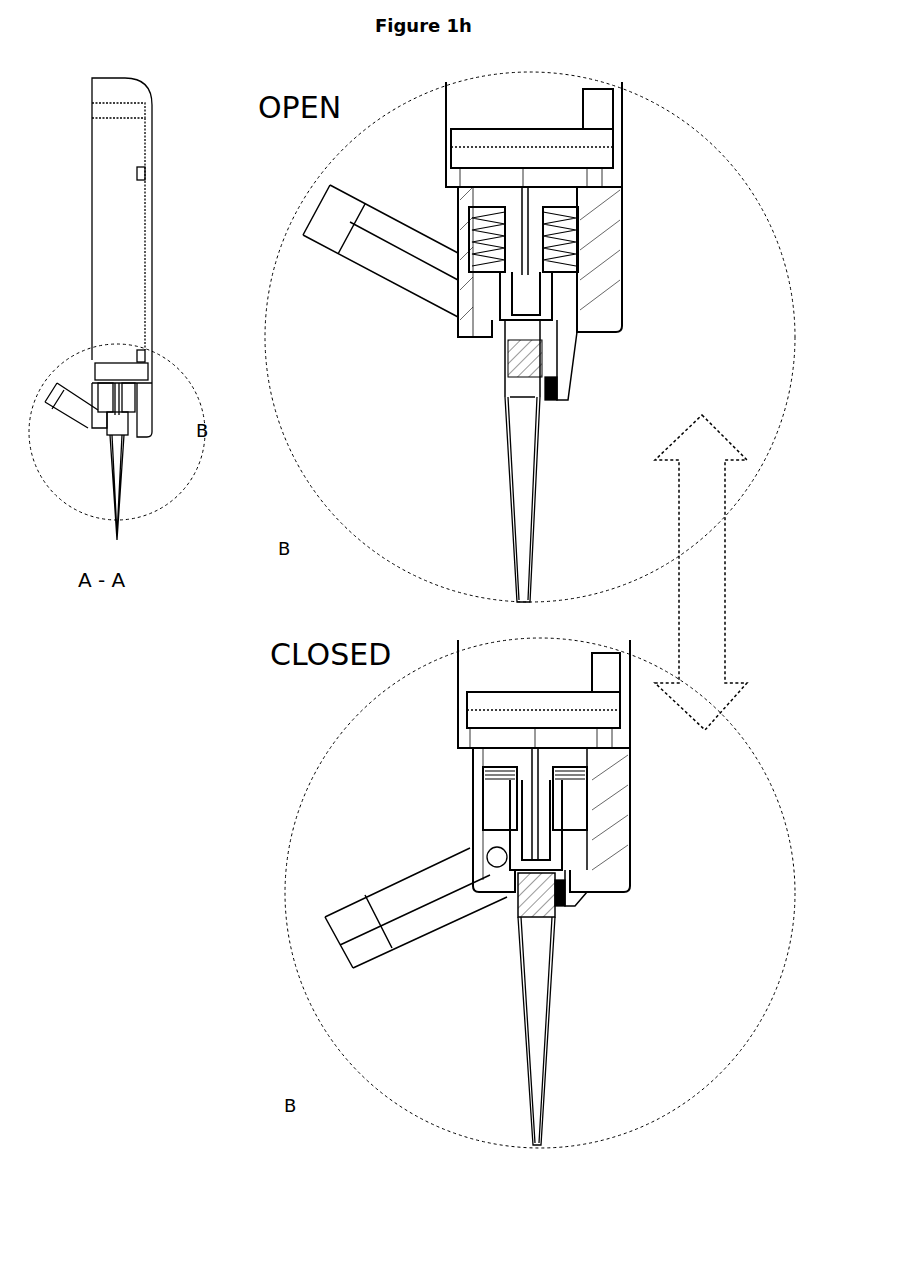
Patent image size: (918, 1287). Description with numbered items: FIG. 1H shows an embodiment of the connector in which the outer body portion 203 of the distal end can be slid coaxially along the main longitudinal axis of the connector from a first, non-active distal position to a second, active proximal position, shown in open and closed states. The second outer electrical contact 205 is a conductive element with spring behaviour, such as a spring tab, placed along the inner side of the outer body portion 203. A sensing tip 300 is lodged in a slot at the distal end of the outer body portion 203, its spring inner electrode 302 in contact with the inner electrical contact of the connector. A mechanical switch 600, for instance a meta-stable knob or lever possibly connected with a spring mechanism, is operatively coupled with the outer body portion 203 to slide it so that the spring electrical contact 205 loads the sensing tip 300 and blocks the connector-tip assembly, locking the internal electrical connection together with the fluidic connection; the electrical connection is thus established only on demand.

The mechanical switch 600 is at (492, 233).
The spring inner electrode 302 is at (510, 360).
The outer body portion 203 is at (567, 360).
The second outer electrical contact 205 is at (550, 402).
The sensing tip 300 is at (535, 560).